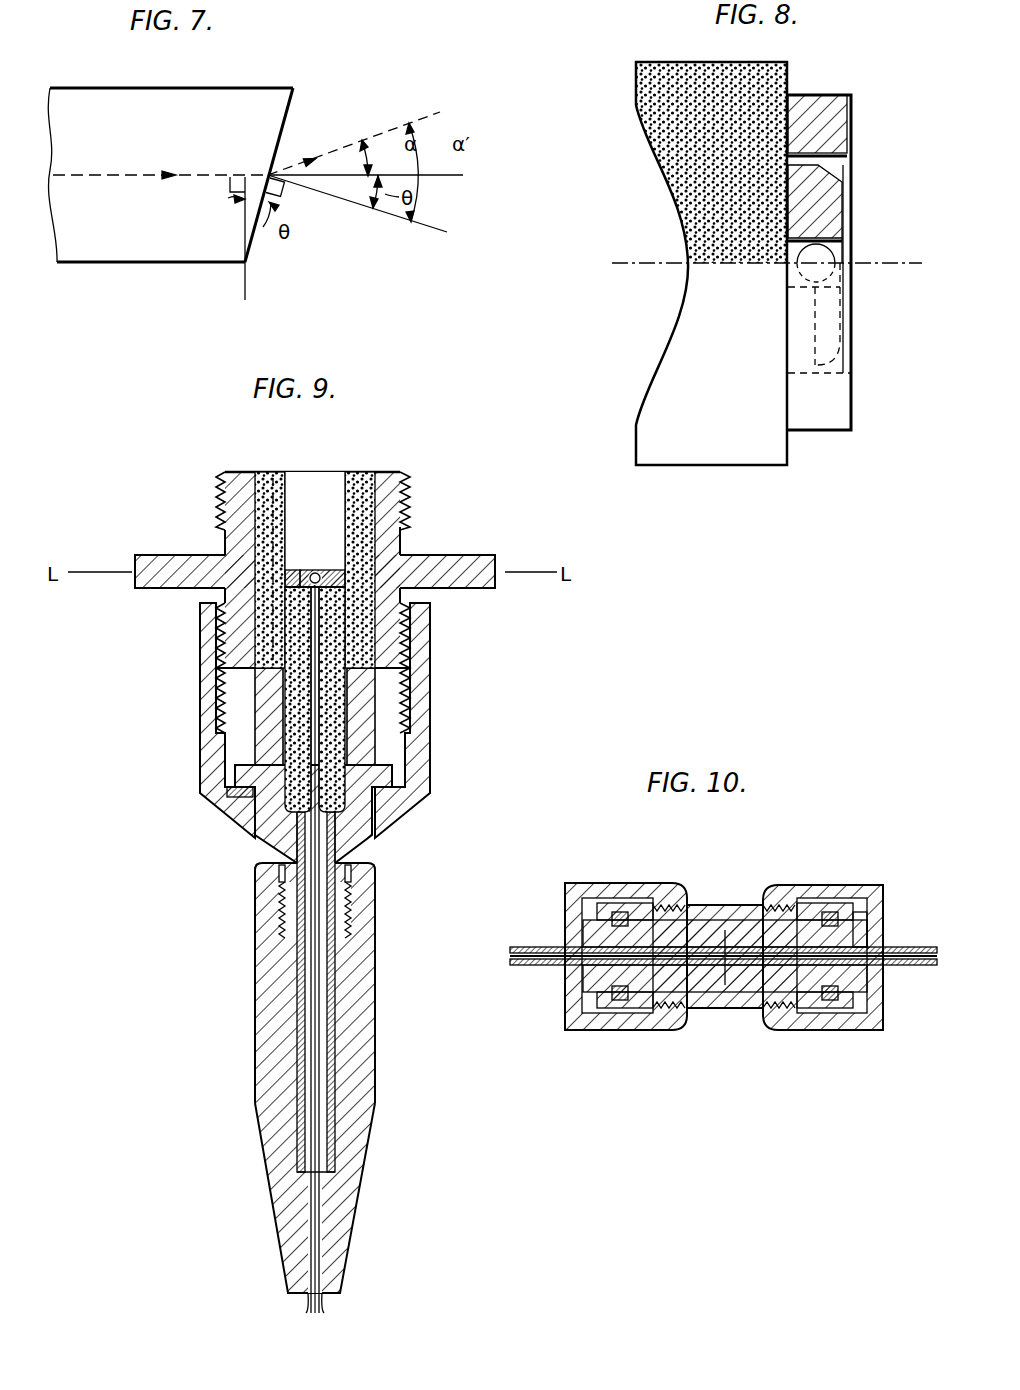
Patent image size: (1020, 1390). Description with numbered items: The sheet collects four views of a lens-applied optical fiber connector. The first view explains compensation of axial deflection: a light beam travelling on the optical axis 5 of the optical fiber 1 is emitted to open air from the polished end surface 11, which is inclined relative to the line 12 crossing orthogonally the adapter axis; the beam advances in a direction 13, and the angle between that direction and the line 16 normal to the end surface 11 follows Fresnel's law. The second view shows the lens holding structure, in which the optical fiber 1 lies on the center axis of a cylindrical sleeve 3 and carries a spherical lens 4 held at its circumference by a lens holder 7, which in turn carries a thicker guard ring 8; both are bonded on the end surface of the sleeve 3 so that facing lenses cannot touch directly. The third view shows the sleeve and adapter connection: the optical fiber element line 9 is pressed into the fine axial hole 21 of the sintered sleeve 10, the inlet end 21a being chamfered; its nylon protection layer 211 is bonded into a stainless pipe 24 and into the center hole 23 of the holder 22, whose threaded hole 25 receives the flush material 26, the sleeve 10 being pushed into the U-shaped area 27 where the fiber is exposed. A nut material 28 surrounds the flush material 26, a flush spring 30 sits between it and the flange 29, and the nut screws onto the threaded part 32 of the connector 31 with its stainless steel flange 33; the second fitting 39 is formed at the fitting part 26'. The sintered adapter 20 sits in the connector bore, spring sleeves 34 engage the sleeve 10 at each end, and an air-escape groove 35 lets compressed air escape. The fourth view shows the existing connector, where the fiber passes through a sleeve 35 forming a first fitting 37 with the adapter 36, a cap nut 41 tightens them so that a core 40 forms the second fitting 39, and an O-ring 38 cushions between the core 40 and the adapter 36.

In FIG. 7, the optical fiber 1 is at (97, 88).
In FIG. 8, the optical fiber 1 is at (683, 266).
In FIG. 8, the cylindrical sleeve 3 is at (788, 84).
In FIG. 8, the spherical lens 4 is at (837, 249).
In FIG. 9, the spherical lens 4 is at (313, 572).
In FIG. 7, the optical axis of the optical fiber 5 is at (62, 180).
In FIG. 8, the lens holder 7 is at (835, 167).
In FIG. 9, the lens holder 7 is at (326, 570).
In FIG. 8, the guard ring 8 is at (847, 135).
In FIG. 9, the guard ring 8 is at (293, 570).
In FIG. 9, the optical fiber element line 9 is at (307, 732).
In FIG. 10, the optical fiber element line 9 is at (700, 953).
In FIG. 9, the sleeve 10 is at (342, 600).
In FIG. 7, the end surface of the optical fiber 11 is at (293, 100).
In FIG. 7, the line crossing orthogonally with the optical axis of the adapter 12 is at (245, 277).
In FIG. 7, the direction of travel of the emitted beam 13 is at (345, 150).
In FIG. 7, the line normal to the end surface 16 is at (420, 232).
In FIG. 9, the adapter 20 is at (373, 513).
In FIG. 9, the axial hole 21 is at (312, 668).
In FIG. 9, the inlet end of the axial hole 21a is at (243, 782).
In FIG. 9, the nylon protection layer 211 is at (320, 1303).
In FIG. 9, the holder 22 is at (255, 1087).
In FIG. 9, the center hole of the holder 23 is at (322, 1213).
In FIG. 9, the stainless pipe 24 is at (333, 1063).
In FIG. 9, the threaded hole 25 is at (363, 908).
In FIG. 9, the flush material 26 is at (299, 825).
In FIG. 9, the fitting part 26' is at (418, 811).
In FIG. 9, the U-shaped area 27 is at (340, 813).
In FIG. 9, the nut material 28 is at (198, 757).
In FIG. 9, the flange of the flush material 29 is at (240, 762).
In FIG. 9, the flush spring 30 is at (240, 807).
In FIG. 9, the connector 31 is at (398, 547).
In FIG. 9, the threaded part 32 is at (222, 514).
In FIG. 9, the stainless steel flange 33 is at (495, 563).
In FIG. 9, the spring sleeve 34 is at (370, 712).
In FIG. 9, the air-escape groove 35 is at (265, 472).
In FIG. 10, the air-escape groove 35 is at (748, 940).
In FIG. 10, the adapter 36 is at (693, 903).
In FIG. 10, the first fitting 37 is at (758, 927).
In FIG. 10, the O-ring 38 is at (847, 917).
In FIG. 10, the second fitting 39 is at (857, 923).
In FIG. 10, the core 40 is at (822, 907).
In FIG. 10, the cap nut 41 is at (783, 890).